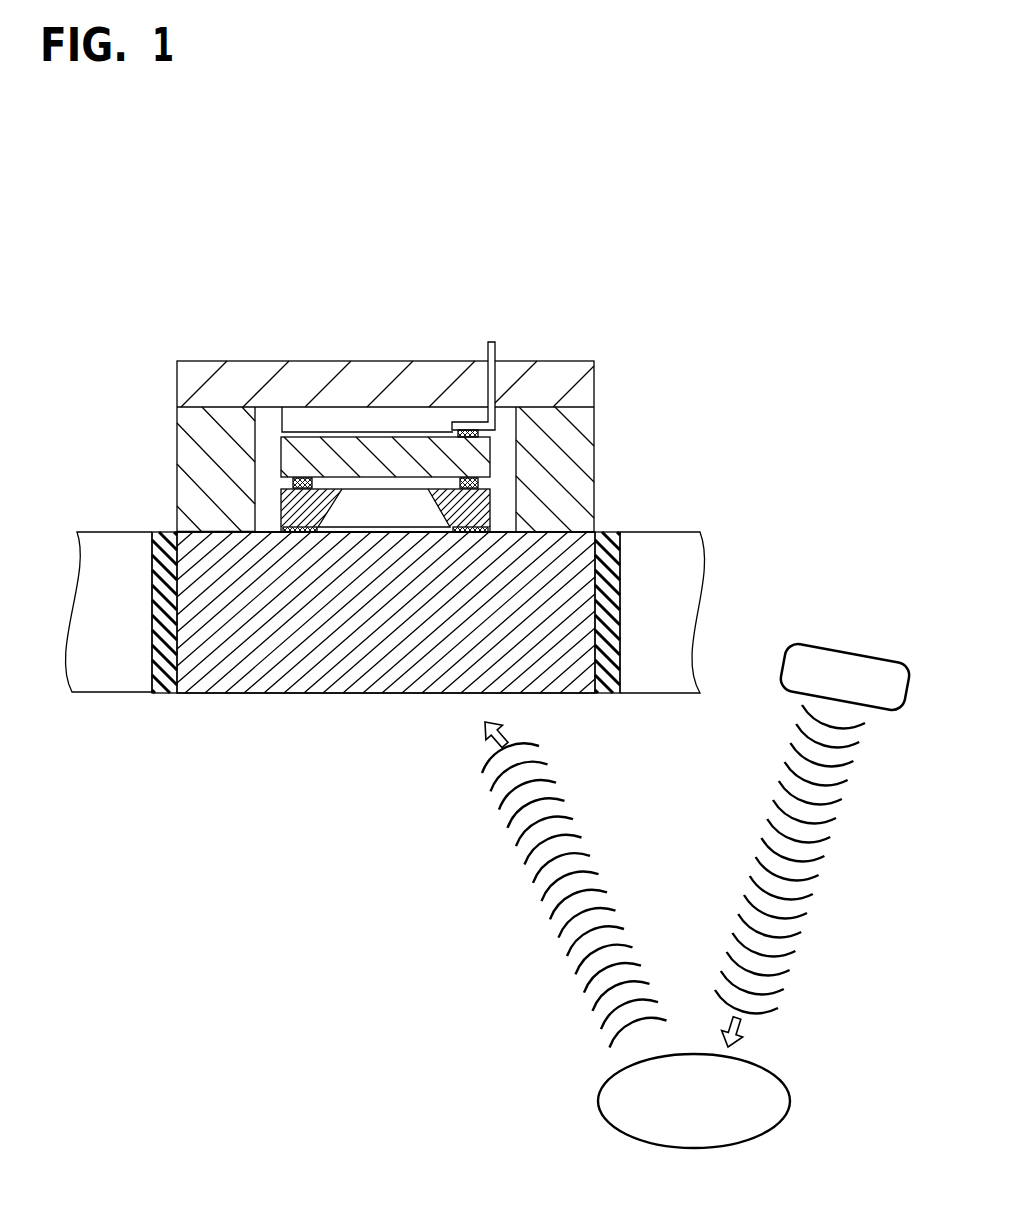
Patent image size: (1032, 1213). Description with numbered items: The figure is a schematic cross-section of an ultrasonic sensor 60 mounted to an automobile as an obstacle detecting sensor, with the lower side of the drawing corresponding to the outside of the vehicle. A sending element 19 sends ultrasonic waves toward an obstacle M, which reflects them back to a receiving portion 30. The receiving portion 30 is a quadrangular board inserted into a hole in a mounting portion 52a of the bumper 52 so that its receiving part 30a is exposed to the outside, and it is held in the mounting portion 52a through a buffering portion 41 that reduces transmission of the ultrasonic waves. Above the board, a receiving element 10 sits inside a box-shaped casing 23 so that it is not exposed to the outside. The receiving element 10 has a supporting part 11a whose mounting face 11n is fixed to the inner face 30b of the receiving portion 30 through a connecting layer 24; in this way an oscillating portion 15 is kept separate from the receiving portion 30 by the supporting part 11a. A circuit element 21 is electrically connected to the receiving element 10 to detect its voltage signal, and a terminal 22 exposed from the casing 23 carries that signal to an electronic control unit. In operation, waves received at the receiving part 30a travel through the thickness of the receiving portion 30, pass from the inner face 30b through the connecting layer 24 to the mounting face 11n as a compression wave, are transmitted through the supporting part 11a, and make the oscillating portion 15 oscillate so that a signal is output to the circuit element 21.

The ultrasonic sensor 60 is at (558, 308).
The casing 23 is at (297, 364).
The terminal 22 is at (495, 353).
The circuit element 21 is at (368, 437).
The oscillating portion 15 is at (390, 488).
The receiving element 10 is at (388, 447).
The mounting face 11n is at (437, 527).
The supporting part 11a is at (503, 530).
The connecting layer 24 is at (248, 532).
The receiving portion 30 is at (422, 593).
The receiving part 30a is at (237, 695).
The inner face 30b is at (505, 534).
The buffering portion 41 is at (168, 688).
The bumper 52 is at (384, 657).
The mounting portion 52a is at (162, 685).
The sending element 19 is at (850, 650).
The obstacle M is at (598, 1095).